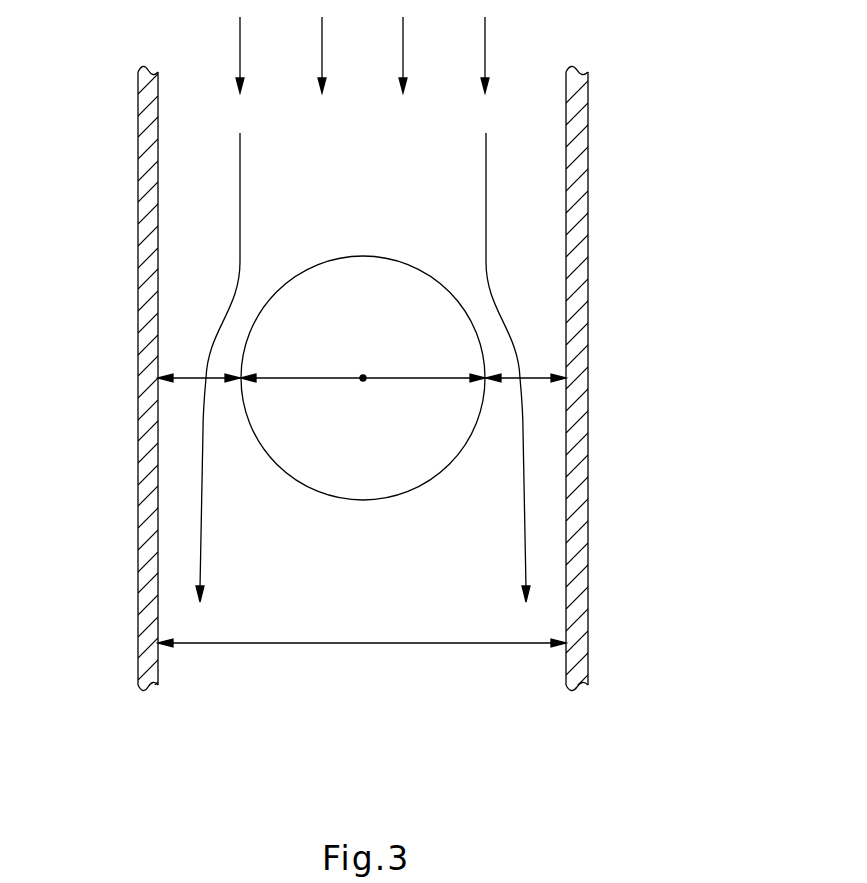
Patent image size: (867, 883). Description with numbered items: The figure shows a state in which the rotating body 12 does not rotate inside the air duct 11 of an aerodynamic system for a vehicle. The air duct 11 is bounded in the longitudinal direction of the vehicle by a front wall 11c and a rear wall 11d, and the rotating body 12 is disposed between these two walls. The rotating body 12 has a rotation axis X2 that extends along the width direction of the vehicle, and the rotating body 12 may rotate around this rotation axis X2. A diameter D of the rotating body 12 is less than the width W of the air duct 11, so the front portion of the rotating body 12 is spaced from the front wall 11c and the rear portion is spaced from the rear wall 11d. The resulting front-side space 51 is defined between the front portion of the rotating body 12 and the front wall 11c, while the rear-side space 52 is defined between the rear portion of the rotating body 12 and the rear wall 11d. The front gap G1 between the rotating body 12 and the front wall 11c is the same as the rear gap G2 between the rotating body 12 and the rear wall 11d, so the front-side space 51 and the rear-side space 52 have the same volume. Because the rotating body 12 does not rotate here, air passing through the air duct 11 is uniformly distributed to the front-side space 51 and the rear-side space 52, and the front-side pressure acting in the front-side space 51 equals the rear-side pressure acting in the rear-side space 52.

The air duct 11 is at (377, 384).
The front wall 11c is at (138, 294).
The rear wall 11d is at (588, 297).
The rotating body 12 is at (360, 256).
The front-side space 51 is at (187, 418).
The rear-side space 52 is at (540, 418).
The front gap G1 is at (199, 364).
The rear gap G2 is at (526, 363).
The diameter D is at (363, 362).
The rotation axis X2 is at (363, 381).
The width W is at (362, 630).